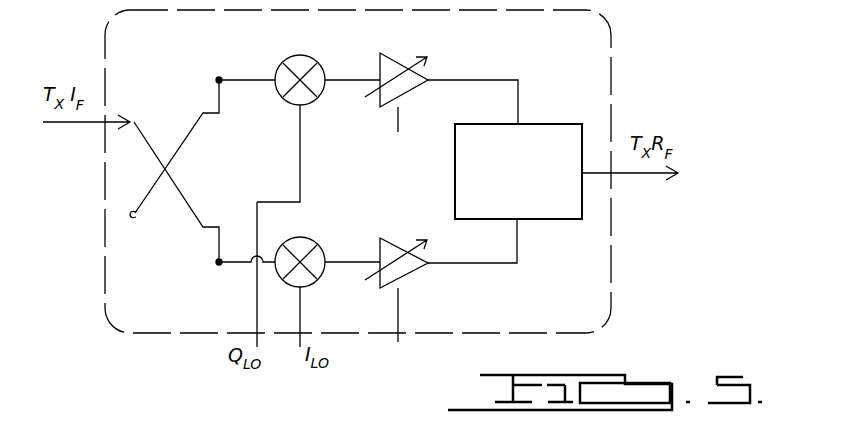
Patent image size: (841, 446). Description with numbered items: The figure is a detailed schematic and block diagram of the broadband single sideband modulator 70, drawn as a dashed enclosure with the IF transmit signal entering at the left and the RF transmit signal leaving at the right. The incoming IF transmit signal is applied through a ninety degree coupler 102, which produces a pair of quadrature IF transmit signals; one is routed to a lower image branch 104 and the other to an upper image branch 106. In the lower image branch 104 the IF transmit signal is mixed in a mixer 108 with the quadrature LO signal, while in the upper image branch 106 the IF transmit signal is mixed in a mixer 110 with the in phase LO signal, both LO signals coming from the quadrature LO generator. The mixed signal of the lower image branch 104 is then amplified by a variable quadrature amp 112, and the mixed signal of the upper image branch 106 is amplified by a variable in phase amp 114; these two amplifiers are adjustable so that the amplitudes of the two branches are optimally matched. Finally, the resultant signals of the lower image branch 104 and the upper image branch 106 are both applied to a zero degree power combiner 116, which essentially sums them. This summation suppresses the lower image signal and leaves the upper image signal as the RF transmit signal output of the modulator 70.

The broadband single sideband modulator 70 is at (592, 56).
The 90° coupler 102 is at (170, 213).
The lower image branch 104 is at (289, 90).
The upper image branch 106 is at (232, 266).
The mixer 108 is at (307, 98).
The mixer 110 is at (319, 252).
The variable quadrature amp 112 is at (395, 58).
The variable in phase amp 114 is at (413, 267).
The 0° power combiner 116 is at (557, 212).